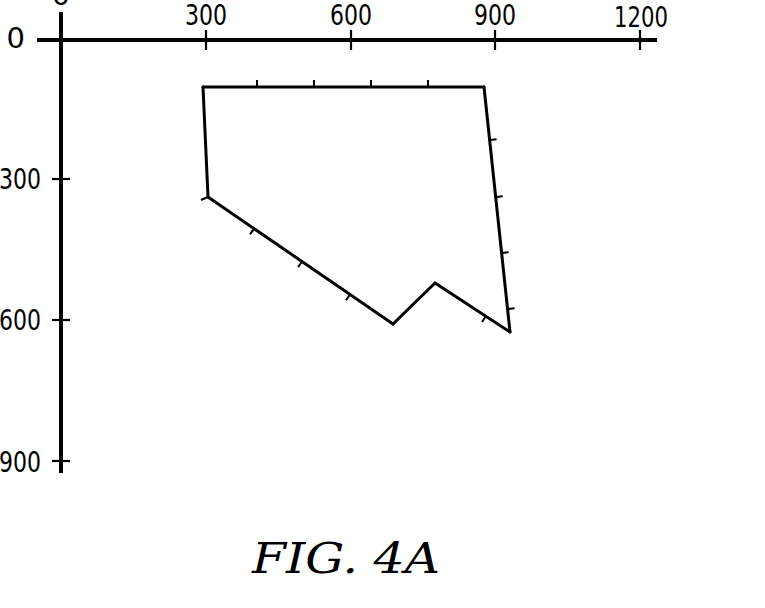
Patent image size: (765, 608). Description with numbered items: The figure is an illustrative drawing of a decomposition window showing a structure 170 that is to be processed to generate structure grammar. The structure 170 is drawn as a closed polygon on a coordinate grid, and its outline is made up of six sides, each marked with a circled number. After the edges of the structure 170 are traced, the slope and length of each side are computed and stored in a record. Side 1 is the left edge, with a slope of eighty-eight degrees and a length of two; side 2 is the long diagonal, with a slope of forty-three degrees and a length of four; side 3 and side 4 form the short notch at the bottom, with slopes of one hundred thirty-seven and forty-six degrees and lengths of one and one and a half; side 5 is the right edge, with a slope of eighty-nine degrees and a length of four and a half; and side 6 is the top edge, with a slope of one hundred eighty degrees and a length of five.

The structure 170 is at (352, 201).
The side 1 is at (205, 142).
The side 2 is at (300, 260).
The side 3 is at (419, 310).
The side 4 is at (472, 317).
The side 5 is at (517, 209).
The side 6 is at (343, 69).